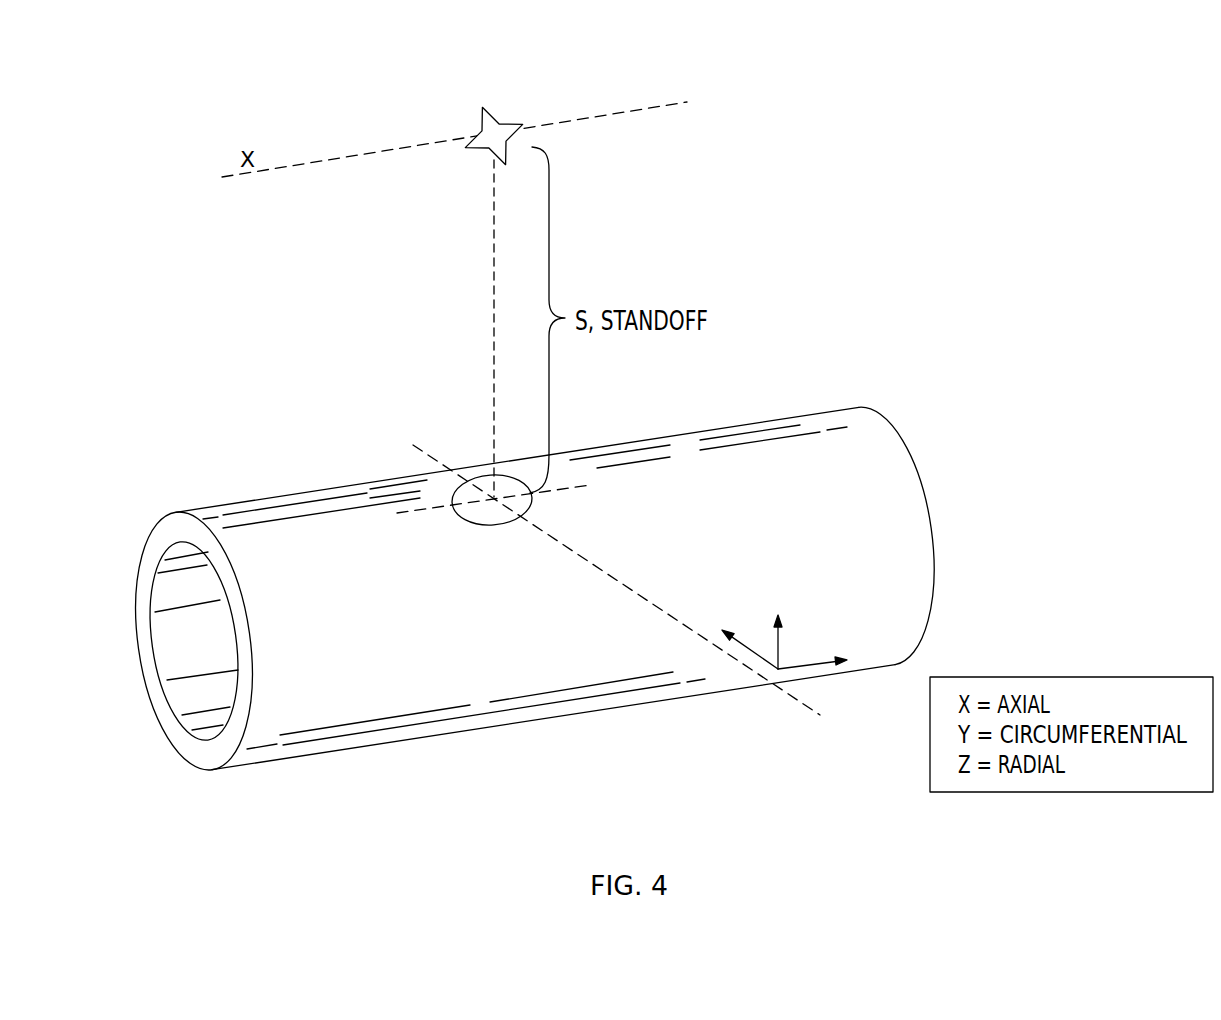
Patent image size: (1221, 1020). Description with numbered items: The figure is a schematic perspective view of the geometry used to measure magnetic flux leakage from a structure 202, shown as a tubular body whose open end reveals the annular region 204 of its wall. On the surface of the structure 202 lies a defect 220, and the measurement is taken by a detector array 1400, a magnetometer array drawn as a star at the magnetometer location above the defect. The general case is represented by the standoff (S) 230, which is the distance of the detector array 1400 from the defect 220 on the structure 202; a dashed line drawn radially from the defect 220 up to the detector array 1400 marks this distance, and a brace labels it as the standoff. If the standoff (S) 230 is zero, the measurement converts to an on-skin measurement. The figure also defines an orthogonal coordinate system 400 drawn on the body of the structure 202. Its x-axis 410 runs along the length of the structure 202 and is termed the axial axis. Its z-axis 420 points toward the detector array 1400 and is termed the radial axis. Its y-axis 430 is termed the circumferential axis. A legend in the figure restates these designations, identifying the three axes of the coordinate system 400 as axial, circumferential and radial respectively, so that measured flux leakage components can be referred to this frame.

The structure 202 is at (808, 411).
The annular region 204 is at (147, 650).
The defect 220 is at (475, 462).
The standoff (S) 230 is at (494, 246).
The orthogonal coordinate system 400 is at (847, 635).
The x-axis 410 is at (805, 666).
The z-axis 420 is at (782, 652).
The y-axis 430 is at (762, 658).
The detector array 1400 is at (480, 127).